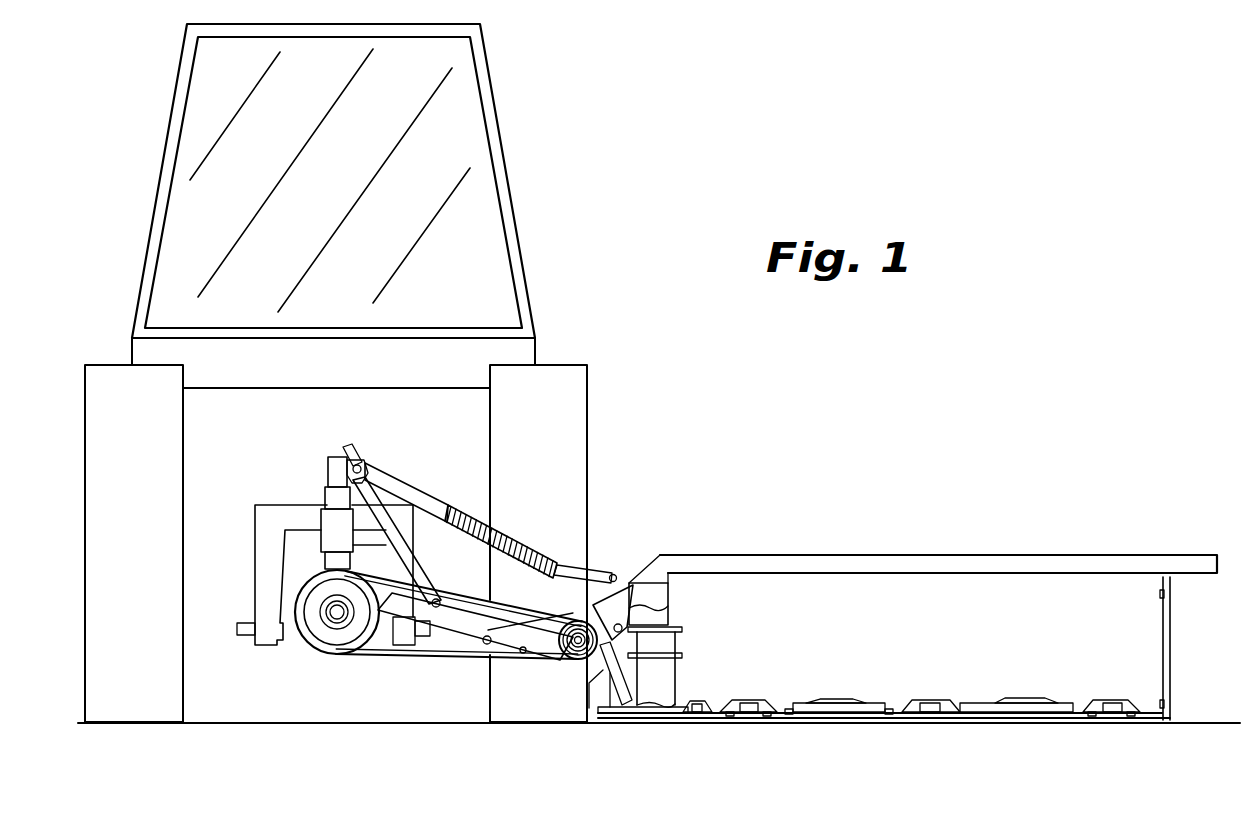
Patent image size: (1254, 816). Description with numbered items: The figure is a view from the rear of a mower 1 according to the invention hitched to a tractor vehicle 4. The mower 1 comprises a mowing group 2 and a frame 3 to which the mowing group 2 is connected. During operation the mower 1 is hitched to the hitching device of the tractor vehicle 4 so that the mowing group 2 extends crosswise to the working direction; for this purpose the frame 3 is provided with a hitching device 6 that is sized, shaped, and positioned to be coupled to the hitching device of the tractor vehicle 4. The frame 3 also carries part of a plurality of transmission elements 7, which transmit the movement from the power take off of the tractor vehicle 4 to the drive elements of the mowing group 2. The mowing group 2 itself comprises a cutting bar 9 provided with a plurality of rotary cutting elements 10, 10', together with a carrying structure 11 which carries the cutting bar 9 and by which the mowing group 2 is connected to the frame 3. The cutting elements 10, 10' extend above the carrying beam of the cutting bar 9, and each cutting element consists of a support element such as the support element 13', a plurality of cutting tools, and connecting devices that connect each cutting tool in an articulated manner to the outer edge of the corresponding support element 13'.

The mower 1 is at (806, 455).
The mowing group 2 is at (858, 735).
The frame 3 is at (376, 643).
The tractor vehicle 4 is at (508, 218).
The hitching device 6 is at (268, 517).
The transmission elements 7 is at (417, 666).
The cutting bar 9 is at (902, 709).
The rotary cutting elements 10 is at (930, 686).
The rotary cutting element 10' is at (700, 686).
The carrying structure 11 is at (961, 548).
The support element 13' is at (653, 733).